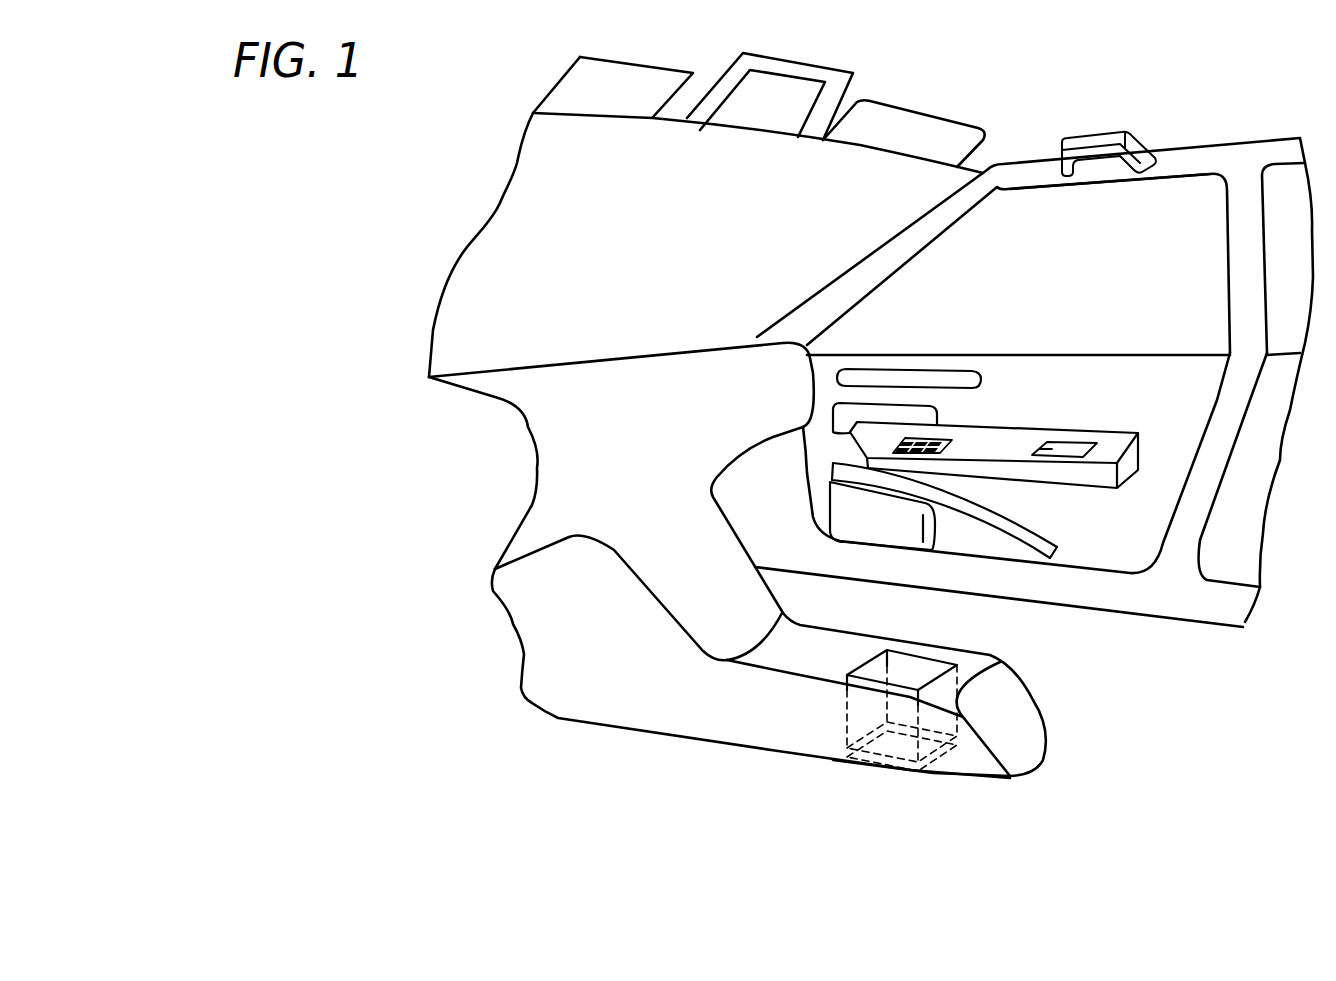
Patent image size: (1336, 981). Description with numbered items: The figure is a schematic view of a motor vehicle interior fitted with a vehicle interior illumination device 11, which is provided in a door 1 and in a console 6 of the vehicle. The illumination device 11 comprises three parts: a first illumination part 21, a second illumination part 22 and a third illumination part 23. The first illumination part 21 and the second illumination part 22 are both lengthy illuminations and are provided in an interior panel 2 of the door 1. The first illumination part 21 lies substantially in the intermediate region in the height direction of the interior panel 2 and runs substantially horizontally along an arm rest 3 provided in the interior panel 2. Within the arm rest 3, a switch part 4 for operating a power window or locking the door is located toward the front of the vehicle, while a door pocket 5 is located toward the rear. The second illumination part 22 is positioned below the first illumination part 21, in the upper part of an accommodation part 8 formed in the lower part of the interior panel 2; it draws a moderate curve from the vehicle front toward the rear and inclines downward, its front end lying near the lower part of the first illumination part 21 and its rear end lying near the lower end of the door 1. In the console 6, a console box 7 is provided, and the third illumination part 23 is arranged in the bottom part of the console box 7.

The door 1 is at (1158, 555).
The interior panel 2 is at (1148, 380).
The arm rest 3 is at (1088, 493).
The switch part 4 is at (925, 443).
The door pocket 5 is at (1067, 450).
The console 6 is at (918, 643).
The console box 7 is at (917, 673).
The accommodation part 8 is at (878, 492).
The vehicle interior illumination device 11 is at (1128, 665).
The first illumination part 21 is at (1020, 427).
The second illumination part 22 is at (1010, 525).
The third illumination part 23 is at (885, 757).